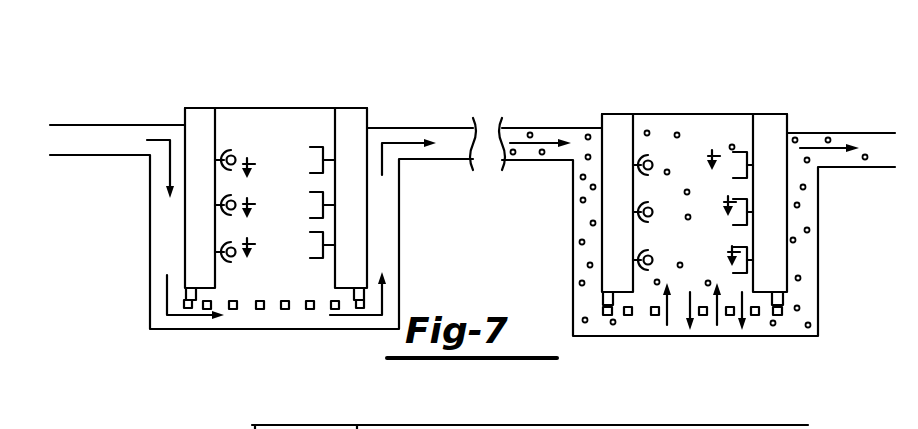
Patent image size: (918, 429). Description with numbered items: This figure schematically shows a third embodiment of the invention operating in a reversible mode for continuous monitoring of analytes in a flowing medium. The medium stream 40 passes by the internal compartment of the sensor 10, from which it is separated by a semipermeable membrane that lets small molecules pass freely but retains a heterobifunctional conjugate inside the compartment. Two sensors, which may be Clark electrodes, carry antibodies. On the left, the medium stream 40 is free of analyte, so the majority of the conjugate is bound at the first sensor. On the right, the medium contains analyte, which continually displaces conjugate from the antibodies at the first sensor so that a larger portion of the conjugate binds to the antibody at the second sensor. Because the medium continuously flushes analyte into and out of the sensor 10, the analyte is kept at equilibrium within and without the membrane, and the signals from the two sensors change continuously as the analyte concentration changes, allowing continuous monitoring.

The sensor 10 is at (362, 98).
The medium stream 40 is at (152, 172).